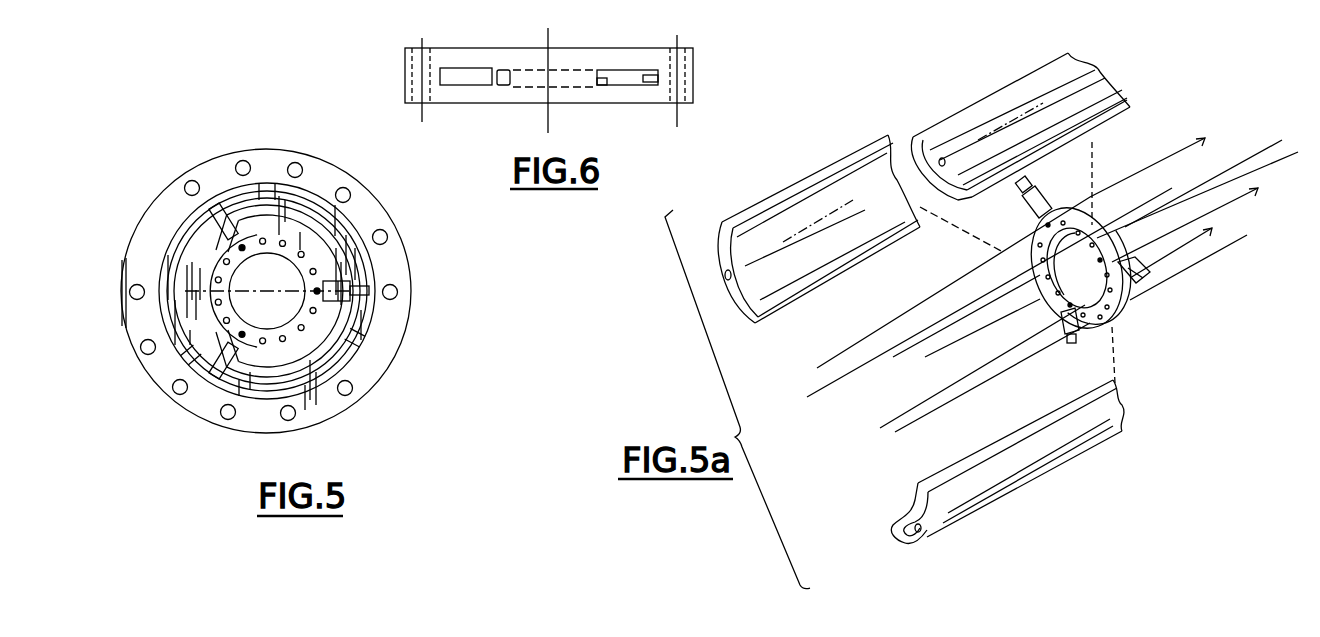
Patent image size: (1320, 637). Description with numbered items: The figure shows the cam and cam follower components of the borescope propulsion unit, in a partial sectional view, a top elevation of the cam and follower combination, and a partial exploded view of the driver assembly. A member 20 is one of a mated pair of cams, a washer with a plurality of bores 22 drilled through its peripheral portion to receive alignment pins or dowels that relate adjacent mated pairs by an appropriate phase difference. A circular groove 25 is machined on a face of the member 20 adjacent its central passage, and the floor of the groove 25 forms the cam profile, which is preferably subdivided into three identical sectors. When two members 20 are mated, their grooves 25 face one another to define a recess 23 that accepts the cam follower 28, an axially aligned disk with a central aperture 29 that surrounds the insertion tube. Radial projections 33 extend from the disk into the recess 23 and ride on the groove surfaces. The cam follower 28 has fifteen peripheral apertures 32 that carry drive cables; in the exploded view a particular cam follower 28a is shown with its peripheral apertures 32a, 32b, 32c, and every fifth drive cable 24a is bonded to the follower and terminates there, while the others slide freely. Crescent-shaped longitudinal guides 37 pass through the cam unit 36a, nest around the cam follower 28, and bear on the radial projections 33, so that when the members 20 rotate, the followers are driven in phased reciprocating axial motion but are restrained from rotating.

In FIG. 5, the member 20 is at (125, 248).
In FIG. 6, the member 20 is at (405, 58).
In FIG. 5, the bores 22 is at (388, 241).
In FIG. 6, the bores 22 is at (677, 52).
In FIG. 6, the recess 23 is at (652, 72).
In FIG. 5, the circular groove 25 is at (348, 347).
In FIG. 5, the cam follower 28 is at (312, 253).
In FIG. 6, the cam follower 28 is at (607, 87).
In FIG. 5A, the cam follower 28a is at (1120, 343).
In FIG. 5, the central aperture 29 is at (270, 267).
In FIG. 5, the peripheral apertures 32 is at (287, 343).
In FIG. 5A, the peripheral apertures 32a is at (1048, 225).
In FIG. 5A, the peripheral apertures 32b is at (1045, 247).
In FIG. 5A, the peripheral apertures 32c is at (1045, 262).
In FIG. 5, the radial projections 33 is at (213, 230).
In FIG. 5A, the radial projections 33 is at (1045, 210).
In FIG. 5, the cam unit 36a is at (195, 152).
In FIG. 5A, the cam unit 36a is at (1122, 326).
In FIG. 5, the longitudinal guides 37 is at (272, 210).
In FIG. 5A, the longitudinal guides 37 is at (963, 120).
In FIG. 5A, the drive cable 24a is at (1173, 153).